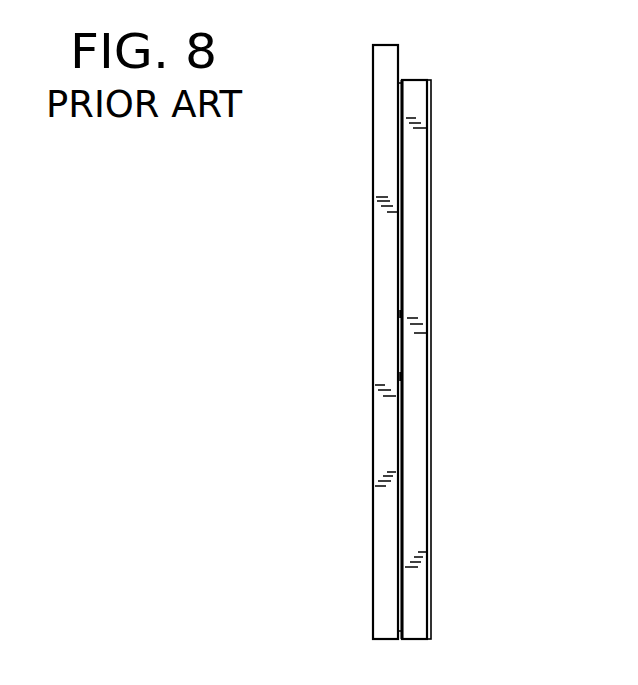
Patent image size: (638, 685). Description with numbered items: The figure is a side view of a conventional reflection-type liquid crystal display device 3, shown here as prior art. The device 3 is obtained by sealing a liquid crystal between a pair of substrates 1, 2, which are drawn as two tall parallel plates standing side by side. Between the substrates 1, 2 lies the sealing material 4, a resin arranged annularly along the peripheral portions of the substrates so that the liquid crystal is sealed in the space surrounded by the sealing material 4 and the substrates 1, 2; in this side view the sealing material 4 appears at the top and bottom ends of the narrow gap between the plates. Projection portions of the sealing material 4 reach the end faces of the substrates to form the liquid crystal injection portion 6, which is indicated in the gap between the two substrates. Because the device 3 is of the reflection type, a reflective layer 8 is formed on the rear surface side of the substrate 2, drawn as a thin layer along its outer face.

The substrate 1 is at (381, 240).
The substrate 2 is at (415, 238).
The liquid crystal display device 3 is at (457, 102).
The sealing material 4 is at (400, 142).
The liquid crystal injection portion 6 is at (398, 348).
The reflective layer 8 is at (432, 427).